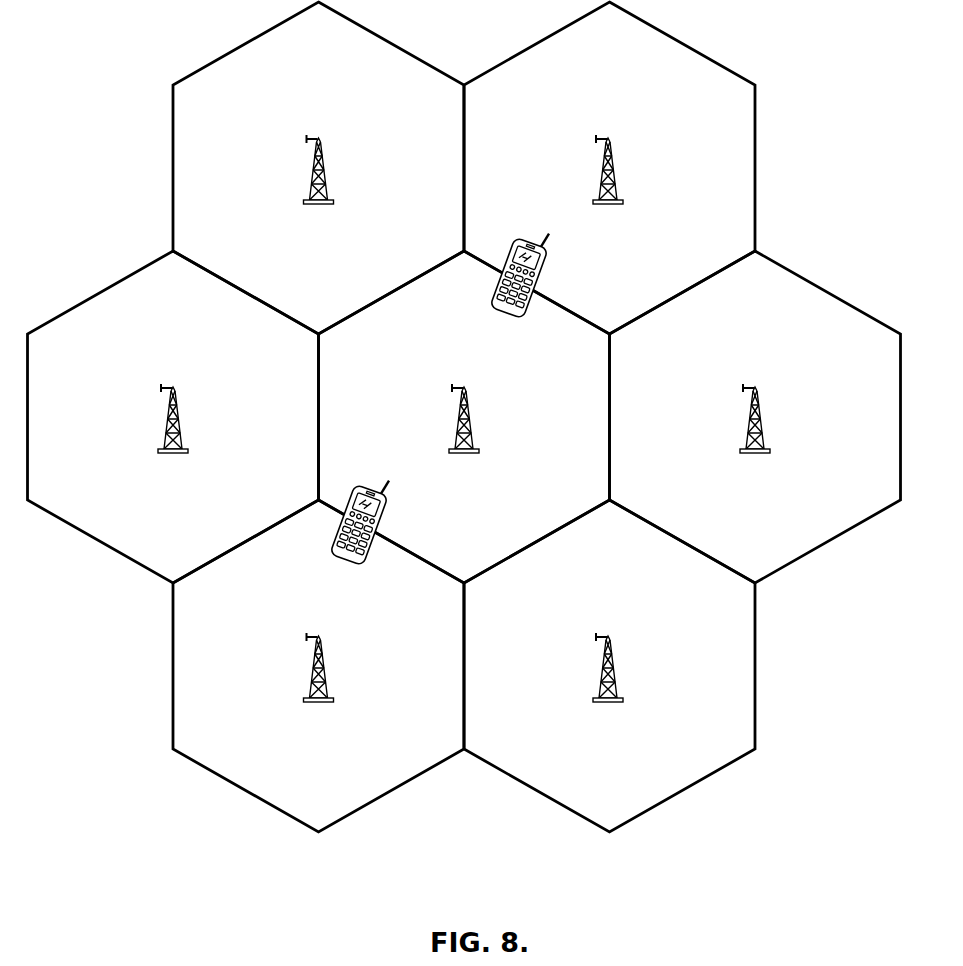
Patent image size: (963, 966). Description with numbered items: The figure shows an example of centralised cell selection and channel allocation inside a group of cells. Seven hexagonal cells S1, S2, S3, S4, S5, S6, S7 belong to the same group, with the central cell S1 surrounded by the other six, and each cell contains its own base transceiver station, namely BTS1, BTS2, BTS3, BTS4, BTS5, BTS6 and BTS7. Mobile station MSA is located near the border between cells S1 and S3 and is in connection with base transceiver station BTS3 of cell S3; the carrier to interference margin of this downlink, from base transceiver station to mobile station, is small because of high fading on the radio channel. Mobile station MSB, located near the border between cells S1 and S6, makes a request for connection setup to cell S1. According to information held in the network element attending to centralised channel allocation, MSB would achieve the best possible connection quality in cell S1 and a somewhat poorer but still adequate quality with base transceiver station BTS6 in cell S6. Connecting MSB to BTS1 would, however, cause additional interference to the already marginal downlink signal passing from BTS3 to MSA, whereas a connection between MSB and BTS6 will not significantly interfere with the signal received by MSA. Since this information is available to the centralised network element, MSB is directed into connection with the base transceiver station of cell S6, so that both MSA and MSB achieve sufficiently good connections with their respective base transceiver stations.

The cell S1 is at (464, 417).
The cell S2 is at (318, 168).
The cell S3 is at (609, 168).
The cell S4 is at (755, 417).
The cell S5 is at (609, 666).
The cell S6 is at (318, 666).
The cell S7 is at (173, 417).
The base transceiver station BTS1 is at (464, 432).
The base transceiver station BTS2 is at (320, 184).
The base transceiver station BTS3 is at (609, 184).
The base transceiver station BTS4 is at (755, 433).
The base transceiver station BTS5 is at (609, 682).
The base transceiver station BTS6 is at (320, 682).
The base transceiver station BTS7 is at (172, 432).
The mobile station MSA is at (540, 271).
The mobile station MSB is at (381, 518).